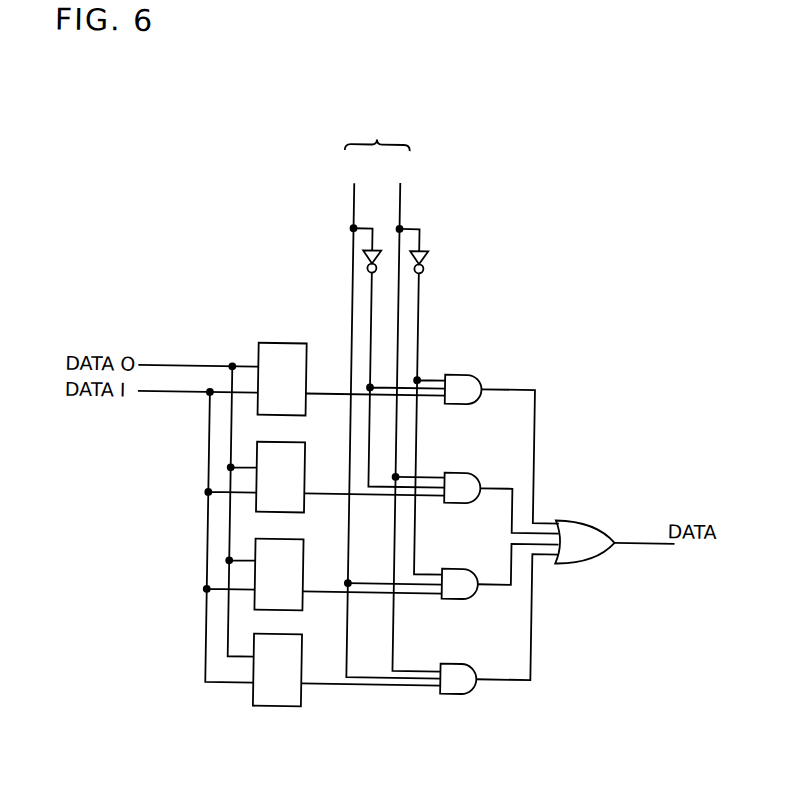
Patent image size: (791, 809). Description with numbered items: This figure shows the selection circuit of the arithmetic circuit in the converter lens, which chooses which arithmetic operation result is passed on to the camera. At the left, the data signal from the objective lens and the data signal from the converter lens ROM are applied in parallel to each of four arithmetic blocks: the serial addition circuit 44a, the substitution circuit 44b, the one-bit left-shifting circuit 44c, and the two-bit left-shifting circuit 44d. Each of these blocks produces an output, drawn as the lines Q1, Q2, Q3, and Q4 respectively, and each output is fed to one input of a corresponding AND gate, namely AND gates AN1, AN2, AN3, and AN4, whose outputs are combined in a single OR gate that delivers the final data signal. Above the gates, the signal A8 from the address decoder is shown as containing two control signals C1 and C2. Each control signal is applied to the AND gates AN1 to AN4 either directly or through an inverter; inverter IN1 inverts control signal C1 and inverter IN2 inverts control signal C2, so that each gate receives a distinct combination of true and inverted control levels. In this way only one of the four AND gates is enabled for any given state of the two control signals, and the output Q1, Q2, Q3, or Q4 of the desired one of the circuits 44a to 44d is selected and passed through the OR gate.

The serial addition circuit 44a is at (287, 345).
The substitution circuit 44b is at (325, 441).
The 1-bit left-shifting circuit 44c is at (304, 558).
The 2-bit left-shifting circuit 44d is at (303, 652).
The AND gate AN1 is at (469, 376).
The AND gate AN2 is at (464, 477).
The AND gate AN3 is at (460, 577).
The AND gate AN4 is at (460, 671).
The inverter IN1 is at (362, 256).
The inverter IN2 is at (422, 256).
The control signal C1 is at (394, 416).
The control signal C2 is at (417, 412).
The signal from the address decoder A8 is at (378, 130).
The output Q1 is at (375, 386).
The output Q2 is at (374, 482).
The output Q3 is at (372, 581).
The output Q4 is at (370, 671).